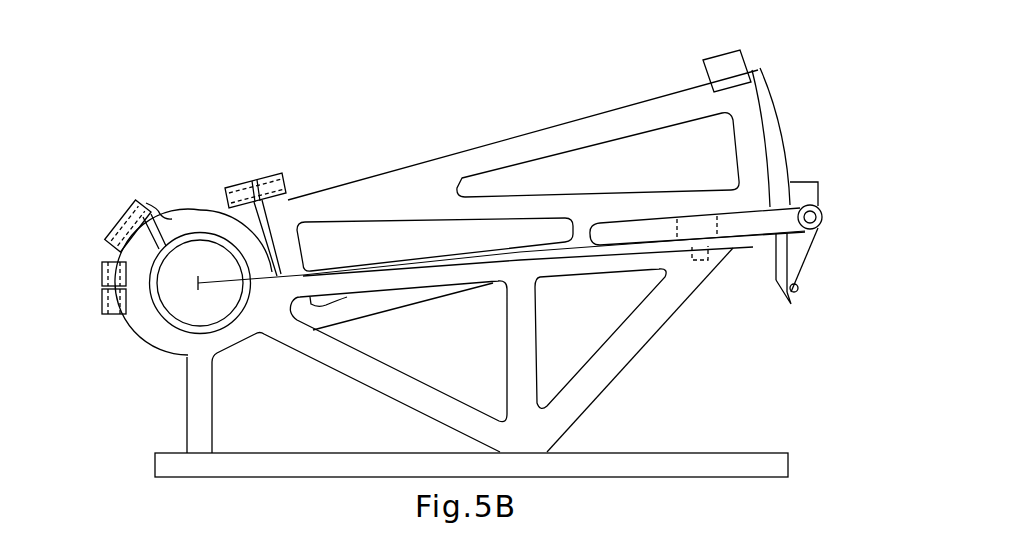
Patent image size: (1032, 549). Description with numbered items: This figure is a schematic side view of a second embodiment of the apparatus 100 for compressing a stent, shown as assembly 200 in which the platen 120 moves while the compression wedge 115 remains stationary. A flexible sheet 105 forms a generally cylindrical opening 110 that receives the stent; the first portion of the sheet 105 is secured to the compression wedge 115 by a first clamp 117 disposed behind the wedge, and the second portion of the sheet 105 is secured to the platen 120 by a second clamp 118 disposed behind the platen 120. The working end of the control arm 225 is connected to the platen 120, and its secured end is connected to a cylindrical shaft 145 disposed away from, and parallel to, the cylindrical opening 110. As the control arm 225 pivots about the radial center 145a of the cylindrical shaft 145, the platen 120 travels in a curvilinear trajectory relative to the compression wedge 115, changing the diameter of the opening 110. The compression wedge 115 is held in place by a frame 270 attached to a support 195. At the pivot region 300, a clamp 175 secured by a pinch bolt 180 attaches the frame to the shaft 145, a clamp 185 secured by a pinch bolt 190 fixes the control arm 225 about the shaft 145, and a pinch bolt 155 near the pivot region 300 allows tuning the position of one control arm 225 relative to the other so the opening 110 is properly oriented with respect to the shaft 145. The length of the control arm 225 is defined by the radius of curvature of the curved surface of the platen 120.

The compression apparatus 100 is at (397, 138).
The flexible sheet 105 is at (795, 293).
The generally cylindrical opening 110 is at (798, 287).
The compression wedge 115 is at (803, 252).
The first clamp 117 is at (805, 192).
The second clamp 118 is at (727, 72).
The platen 120 is at (778, 248).
The cylindrical shaft 145 is at (196, 238).
The radial center 145a is at (198, 285).
The pinch bolt 155 is at (273, 173).
The clamp 175 is at (150, 203).
The pinch bolt 180 is at (150, 325).
The clamp 185 is at (120, 318).
The pinch bolt 190 is at (110, 258).
The support 195 is at (722, 467).
The assembly 200 is at (812, 77).
The control arm 225 is at (490, 154).
The frame 270 is at (603, 377).
The pivot region 300 is at (172, 184).